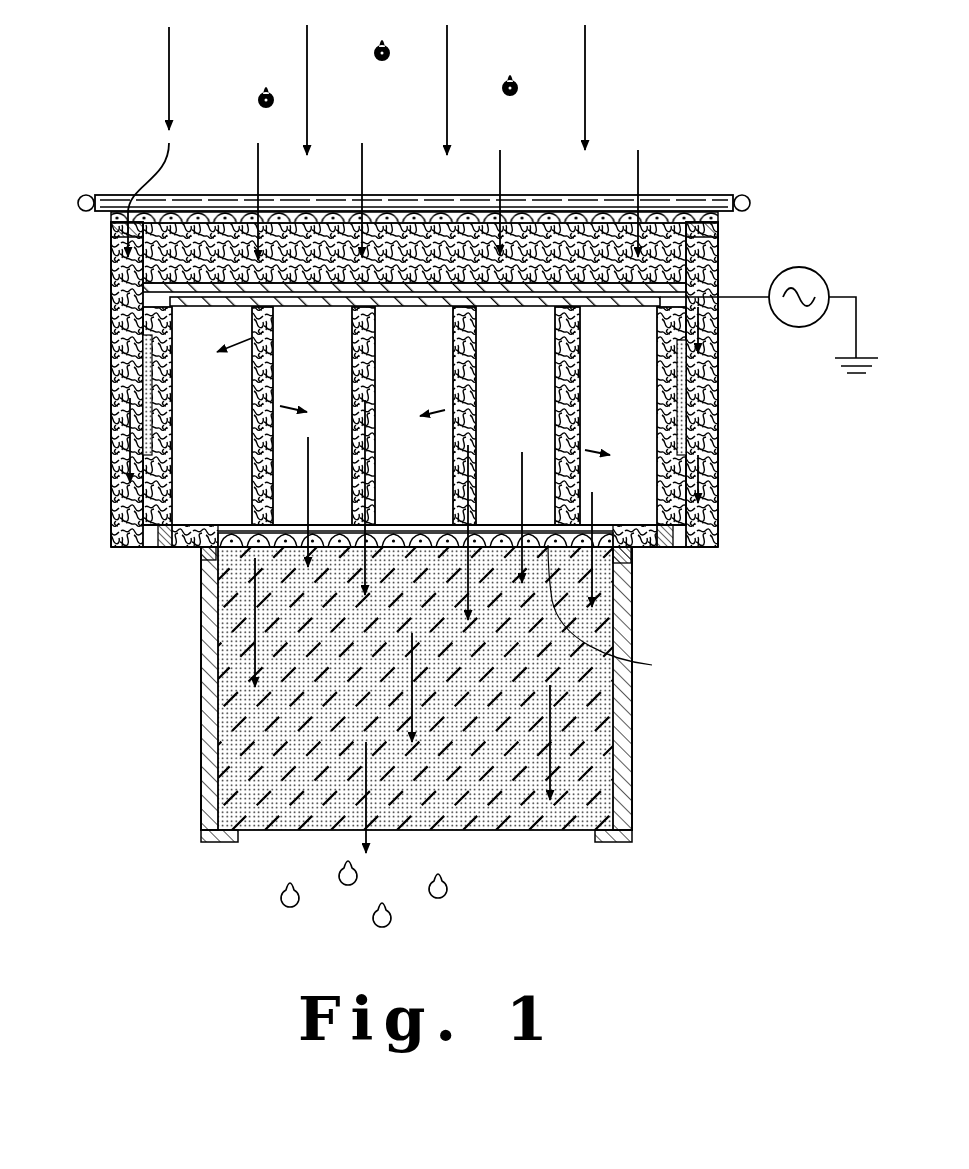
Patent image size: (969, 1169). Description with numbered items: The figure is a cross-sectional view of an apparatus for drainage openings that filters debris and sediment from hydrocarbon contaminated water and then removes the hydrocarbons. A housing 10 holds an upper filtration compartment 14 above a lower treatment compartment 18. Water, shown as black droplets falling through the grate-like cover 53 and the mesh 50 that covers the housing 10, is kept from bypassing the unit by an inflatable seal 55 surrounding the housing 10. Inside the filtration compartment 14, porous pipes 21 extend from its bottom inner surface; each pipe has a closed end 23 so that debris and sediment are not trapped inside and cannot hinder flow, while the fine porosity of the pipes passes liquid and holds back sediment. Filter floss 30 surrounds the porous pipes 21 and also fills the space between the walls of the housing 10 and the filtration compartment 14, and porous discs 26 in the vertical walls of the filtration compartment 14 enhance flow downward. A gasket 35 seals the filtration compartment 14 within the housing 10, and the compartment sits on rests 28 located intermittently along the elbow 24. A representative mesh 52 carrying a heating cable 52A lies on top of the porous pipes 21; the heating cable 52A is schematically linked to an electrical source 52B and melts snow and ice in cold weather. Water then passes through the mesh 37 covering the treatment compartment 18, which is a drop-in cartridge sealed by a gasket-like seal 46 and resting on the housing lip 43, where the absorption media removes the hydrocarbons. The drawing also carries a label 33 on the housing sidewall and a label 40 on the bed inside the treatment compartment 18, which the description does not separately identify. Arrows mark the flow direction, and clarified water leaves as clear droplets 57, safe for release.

The housing 10 is at (110, 330).
The filtration compartment 14 is at (160, 216).
The treatment compartment 18 is at (200, 715).
The porous pipes 21 is at (110, 431).
The closed end 23 is at (392, 307).
The elbow 24 is at (108, 545).
The porous discs 26 is at (112, 367).
The rests 28 is at (662, 548).
The filter floss 30 is at (402, 230).
The housing wall 33 is at (718, 462).
The gasket 35 is at (718, 233).
The mesh 37 is at (618, 613).
The collection bed 40 is at (585, 690).
The housing lip 43 is at (223, 842).
The seal 46 is at (198, 554).
The mesh 50 is at (207, 213).
The mesh 52 is at (228, 307).
The heating cable 52A is at (110, 268).
The electrical source 52B is at (806, 268).
The grate-like cover 53 is at (606, 196).
The inflatable seal 55 is at (748, 203).
The clear droplets 57 is at (517, 855).